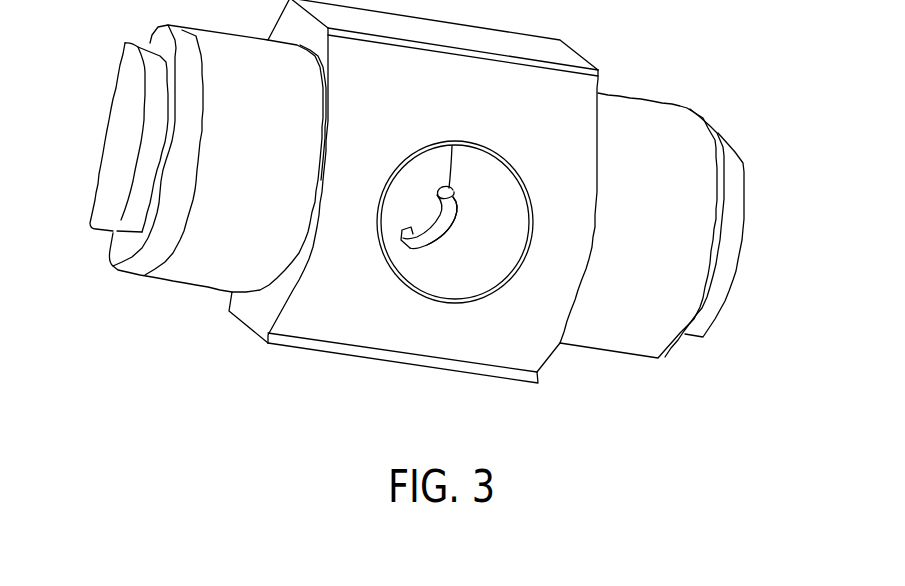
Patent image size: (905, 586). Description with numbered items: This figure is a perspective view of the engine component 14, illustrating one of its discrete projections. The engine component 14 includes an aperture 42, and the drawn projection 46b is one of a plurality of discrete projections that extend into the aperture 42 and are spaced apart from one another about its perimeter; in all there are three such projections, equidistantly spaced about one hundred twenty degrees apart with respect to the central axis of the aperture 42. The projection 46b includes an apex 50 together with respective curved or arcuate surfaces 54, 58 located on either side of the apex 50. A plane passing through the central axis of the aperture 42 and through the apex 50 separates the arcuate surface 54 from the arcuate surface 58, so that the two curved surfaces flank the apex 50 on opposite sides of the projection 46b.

The engine component 14 is at (735, 82).
The aperture 42 is at (420, 152).
The projection 46b is at (413, 219).
The apex 50 is at (432, 220).
The arcuate surface 54 is at (401, 236).
The arcuate surface 58 is at (453, 190).